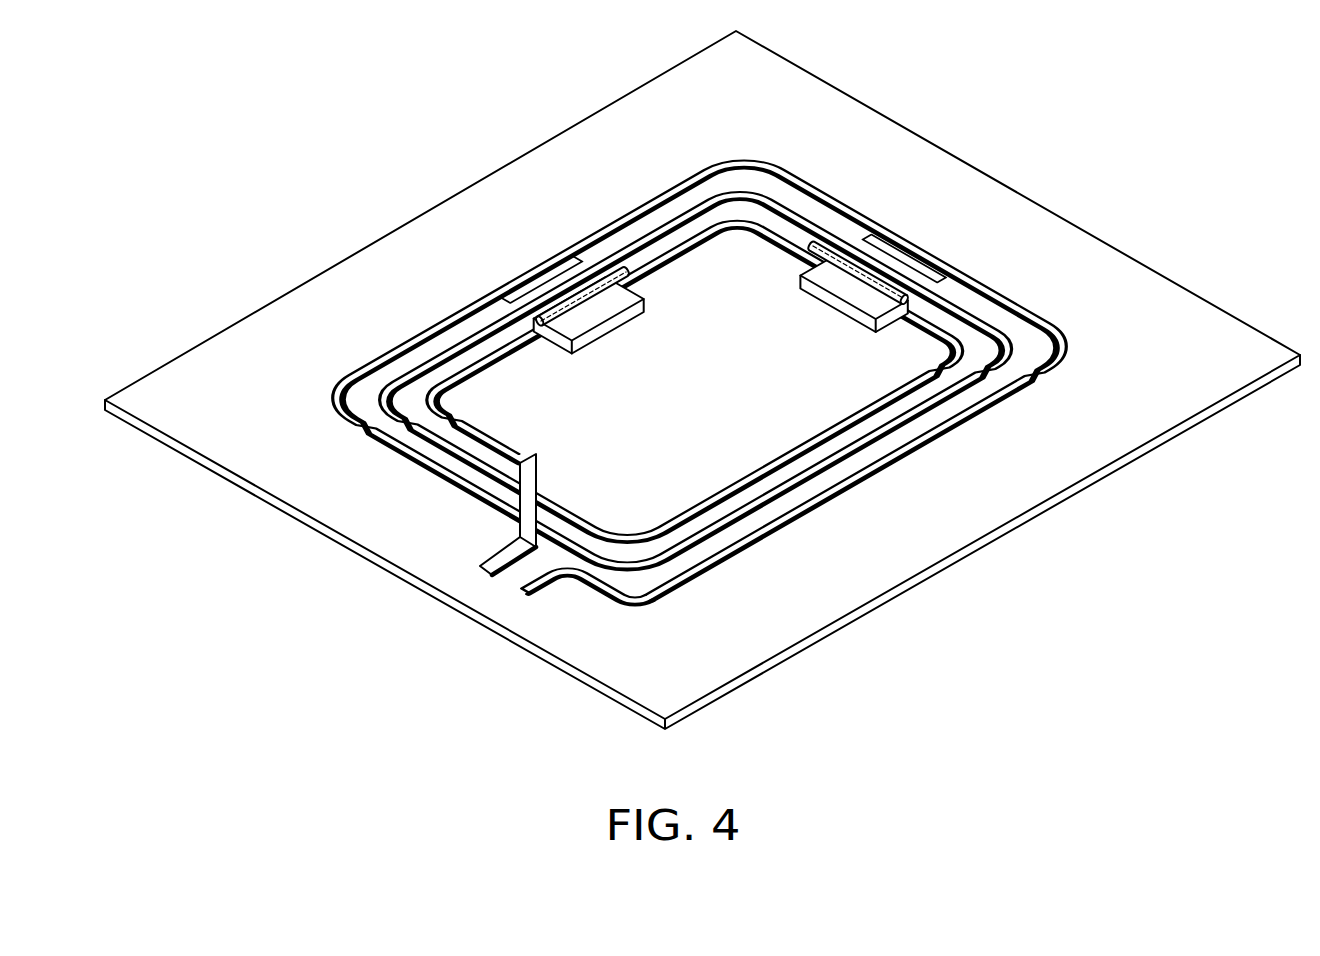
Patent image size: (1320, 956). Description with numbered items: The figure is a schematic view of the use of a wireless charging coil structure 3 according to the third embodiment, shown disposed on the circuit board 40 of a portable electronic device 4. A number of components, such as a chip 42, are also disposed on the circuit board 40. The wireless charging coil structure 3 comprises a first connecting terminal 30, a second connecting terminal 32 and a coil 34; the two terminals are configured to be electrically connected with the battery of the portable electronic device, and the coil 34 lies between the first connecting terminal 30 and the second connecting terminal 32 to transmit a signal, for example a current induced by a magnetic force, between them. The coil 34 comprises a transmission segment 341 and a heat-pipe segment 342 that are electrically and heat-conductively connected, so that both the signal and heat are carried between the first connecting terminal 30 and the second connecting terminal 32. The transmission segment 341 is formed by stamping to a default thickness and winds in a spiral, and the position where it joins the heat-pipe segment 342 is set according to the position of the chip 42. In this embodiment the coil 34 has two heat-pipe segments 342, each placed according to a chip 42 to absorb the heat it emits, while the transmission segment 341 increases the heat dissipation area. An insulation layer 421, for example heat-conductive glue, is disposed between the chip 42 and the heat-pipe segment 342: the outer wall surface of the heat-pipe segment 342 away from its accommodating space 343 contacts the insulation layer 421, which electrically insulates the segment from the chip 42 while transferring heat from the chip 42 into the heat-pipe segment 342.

The wireless charging coil structure 3 is at (680, 386).
The portable electronic device 4 is at (702, 380).
The first connecting terminal 30 is at (480, 567).
The second connecting terminal 32 is at (528, 593).
The coil 34 is at (741, 150).
The circuit board 40 is at (482, 178).
The chip 42 is at (610, 332).
The transmission segment 341 is at (847, 212).
The heat-pipe segment 342 is at (883, 288).
The accommodating space 343 is at (905, 276).
The insulation layer 421 is at (632, 300).